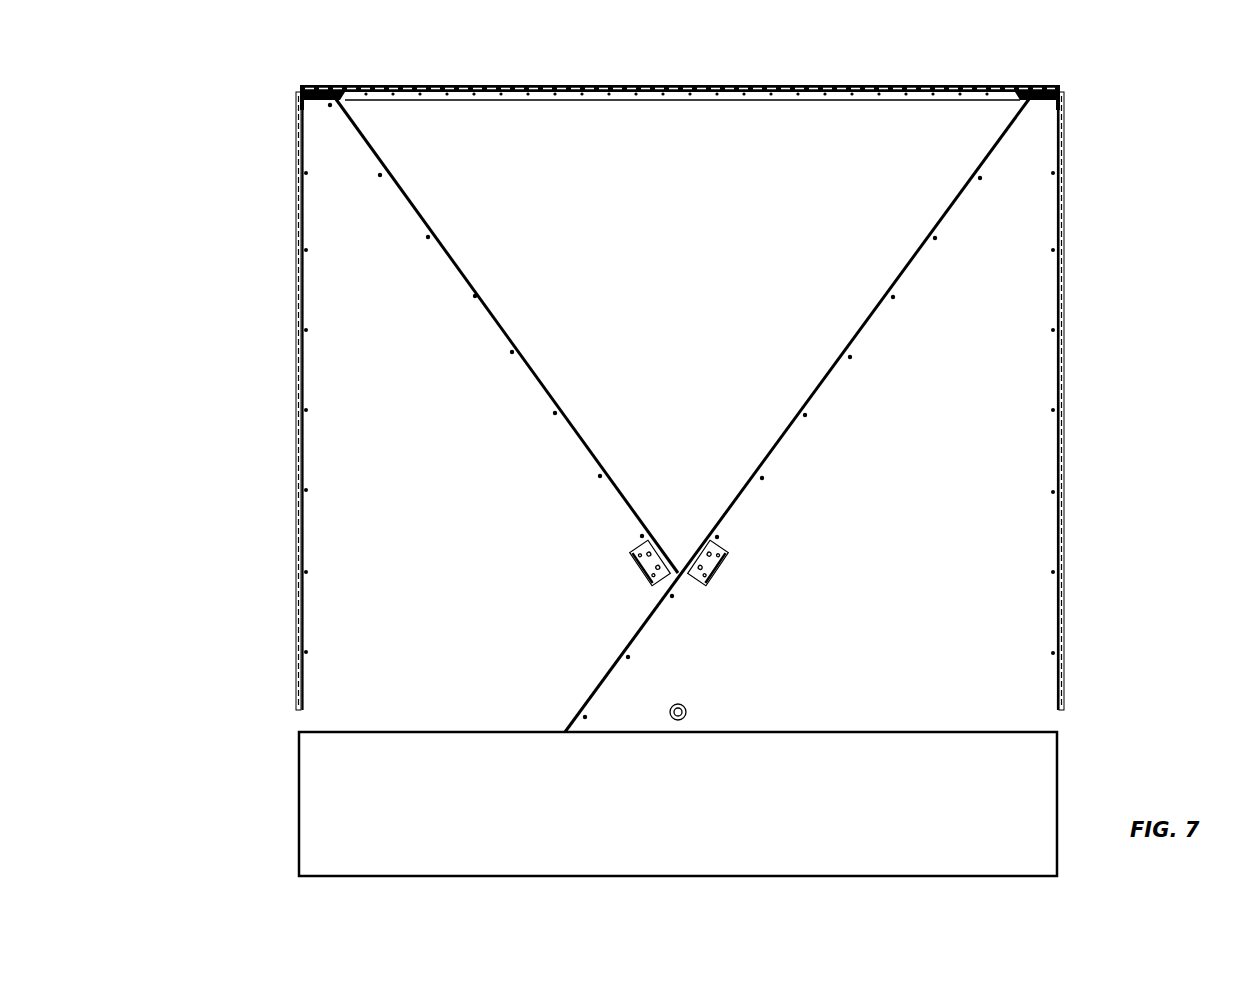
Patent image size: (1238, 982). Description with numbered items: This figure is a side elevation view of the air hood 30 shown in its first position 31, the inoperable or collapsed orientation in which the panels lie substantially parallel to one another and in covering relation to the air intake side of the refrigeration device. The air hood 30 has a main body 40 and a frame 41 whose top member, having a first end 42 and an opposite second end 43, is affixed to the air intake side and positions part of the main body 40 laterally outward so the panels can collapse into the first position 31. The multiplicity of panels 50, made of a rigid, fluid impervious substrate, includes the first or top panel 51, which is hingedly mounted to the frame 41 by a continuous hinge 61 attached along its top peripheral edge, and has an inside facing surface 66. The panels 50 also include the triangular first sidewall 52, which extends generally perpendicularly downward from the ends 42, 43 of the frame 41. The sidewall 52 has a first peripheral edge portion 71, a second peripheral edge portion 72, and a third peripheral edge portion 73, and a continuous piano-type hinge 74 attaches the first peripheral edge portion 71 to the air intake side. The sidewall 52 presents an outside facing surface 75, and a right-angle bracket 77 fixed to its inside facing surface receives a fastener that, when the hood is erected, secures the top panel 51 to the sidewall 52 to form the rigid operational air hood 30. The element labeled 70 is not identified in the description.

The air hood 30 is at (838, 76).
The first position 31 is at (1063, 432).
The main body 40 is at (266, 368).
The frame 41 is at (688, 85).
The first end 42 is at (1042, 87).
The second end 43 is at (316, 86).
The multiplicity of panels 50 is at (1104, 490).
The first or top panel 51 is at (663, 283).
The first sidewall 52 is at (939, 449).
The continuous hinge 61 is at (598, 85).
The inside facing surface 66 is at (759, 250).
The lower panel 70 is at (911, 597).
The first peripheral edge portion 71 is at (1058, 548).
The second peripheral edge portion 72 is at (878, 730).
The third peripheral edge portion 73 is at (865, 322).
The continuous piano-type hinge 74 is at (297, 558).
The outside facing surface 75 is at (1017, 320).
The right-angle bracket 77 is at (640, 568).